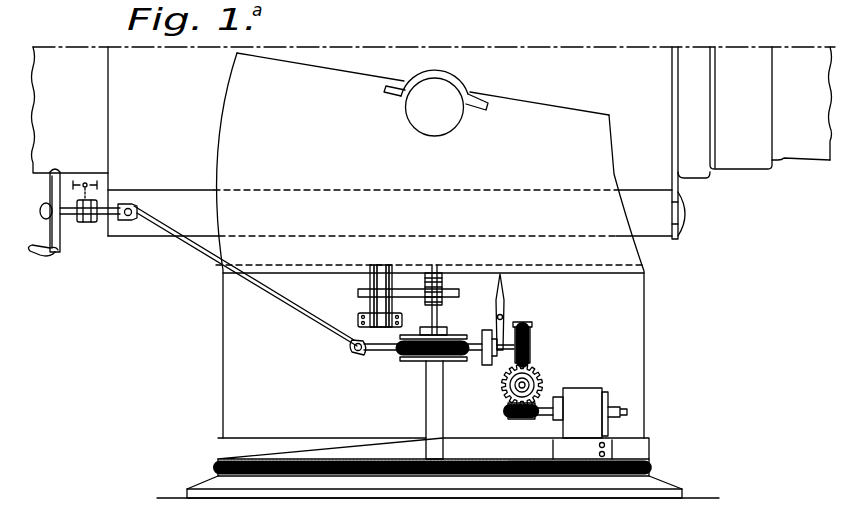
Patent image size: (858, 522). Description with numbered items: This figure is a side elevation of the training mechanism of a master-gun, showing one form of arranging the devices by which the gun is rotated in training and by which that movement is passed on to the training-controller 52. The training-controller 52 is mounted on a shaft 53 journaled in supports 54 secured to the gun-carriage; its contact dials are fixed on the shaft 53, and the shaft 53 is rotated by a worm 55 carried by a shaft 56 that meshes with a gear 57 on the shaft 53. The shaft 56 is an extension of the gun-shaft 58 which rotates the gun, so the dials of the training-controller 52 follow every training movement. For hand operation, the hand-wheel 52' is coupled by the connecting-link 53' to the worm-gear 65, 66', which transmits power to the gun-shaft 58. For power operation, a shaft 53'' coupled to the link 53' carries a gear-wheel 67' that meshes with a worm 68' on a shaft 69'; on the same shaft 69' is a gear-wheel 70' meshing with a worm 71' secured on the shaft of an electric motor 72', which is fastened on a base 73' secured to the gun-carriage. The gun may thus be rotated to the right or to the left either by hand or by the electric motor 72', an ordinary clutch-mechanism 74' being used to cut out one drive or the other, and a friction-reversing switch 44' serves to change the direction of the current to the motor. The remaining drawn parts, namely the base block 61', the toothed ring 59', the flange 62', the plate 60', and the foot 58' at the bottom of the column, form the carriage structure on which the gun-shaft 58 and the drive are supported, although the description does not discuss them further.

The friction-reversing switch 44' is at (80, 201).
The hand-wheel 52' is at (48, 266).
The supports 54 is at (126, 222).
The connecting-link 53' is at (242, 279).
The training-controller 52 is at (359, 296).
The shaft 53 is at (424, 297).
The shaft 56 is at (438, 274).
The gear 57 is at (428, 275).
The worm 55 is at (442, 302).
The worm-gear 66' is at (445, 365).
The worm-gear 65 is at (416, 365).
The shaft 53'' is at (418, 374).
The clutch-mechanism 74' is at (530, 312).
The gear-wheel 67' is at (554, 338).
The gear-wheel 70' is at (551, 381).
The worm 68' is at (491, 399).
The shaft 69' is at (492, 432).
The worm 71' is at (527, 434).
The electric motor 72' is at (621, 405).
The gun-shaft 58 is at (398, 410).
The base block 61' is at (404, 438).
The toothed ring 59' is at (433, 490).
The base flange 62' is at (227, 492).
The base plate 60' is at (438, 505).
The column foot 58' is at (423, 490).
The base 73' is at (614, 492).